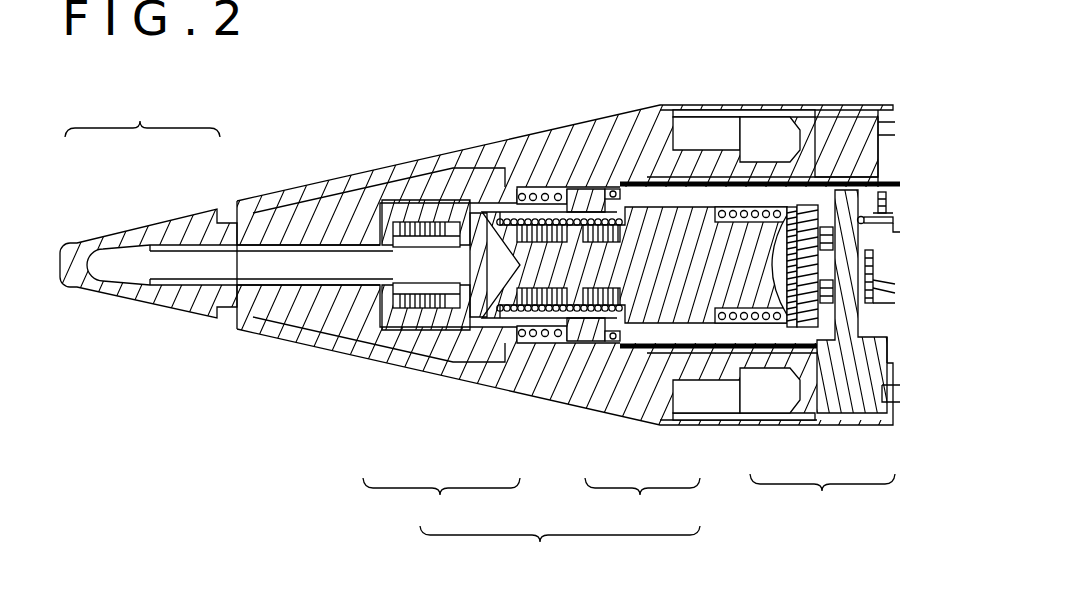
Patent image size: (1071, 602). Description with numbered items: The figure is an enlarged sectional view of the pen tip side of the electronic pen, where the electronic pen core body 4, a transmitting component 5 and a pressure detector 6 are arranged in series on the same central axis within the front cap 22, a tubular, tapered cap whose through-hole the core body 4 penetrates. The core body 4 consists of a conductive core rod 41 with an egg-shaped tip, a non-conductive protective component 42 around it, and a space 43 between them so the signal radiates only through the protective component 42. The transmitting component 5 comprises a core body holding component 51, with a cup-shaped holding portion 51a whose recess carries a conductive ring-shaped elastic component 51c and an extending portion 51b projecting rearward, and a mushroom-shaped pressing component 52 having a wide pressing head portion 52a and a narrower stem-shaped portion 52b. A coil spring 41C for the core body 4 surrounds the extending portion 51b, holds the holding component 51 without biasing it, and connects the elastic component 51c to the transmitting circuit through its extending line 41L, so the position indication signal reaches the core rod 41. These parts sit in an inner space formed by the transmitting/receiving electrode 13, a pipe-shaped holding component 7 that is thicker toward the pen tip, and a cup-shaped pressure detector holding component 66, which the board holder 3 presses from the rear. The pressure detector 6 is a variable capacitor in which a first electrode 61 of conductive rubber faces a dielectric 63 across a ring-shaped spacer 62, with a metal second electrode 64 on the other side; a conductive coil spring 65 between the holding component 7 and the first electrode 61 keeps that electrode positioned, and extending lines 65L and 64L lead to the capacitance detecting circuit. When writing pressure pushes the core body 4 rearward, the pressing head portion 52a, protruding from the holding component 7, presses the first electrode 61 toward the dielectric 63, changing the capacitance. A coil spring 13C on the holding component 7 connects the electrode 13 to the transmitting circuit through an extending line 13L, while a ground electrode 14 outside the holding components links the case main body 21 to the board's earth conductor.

The board holder 3 is at (893, 350).
The electronic pen core body 4 is at (535, 301).
The core rod 41 is at (122, 263).
The protective component 42 is at (78, 268).
The space 43 is at (180, 248).
The transmitting component 5 is at (574, 301).
The core body holding component 51 is at (574, 301).
The holding portion 51a is at (407, 312).
The extending portion 51b is at (545, 278).
The elastic component 51c is at (430, 300).
The pressing component 52 is at (574, 301).
The pressing head portion 52a is at (705, 290).
The stem-shaped portion 52b is at (650, 330).
The pressure detector 6 is at (855, 301).
The first electrode 61 is at (792, 330).
The spacer 62 is at (808, 330).
The dielectric 63 is at (828, 305).
The second electrode 64 is at (848, 345).
The coil spring for the pressure detector 65 is at (740, 277).
The pressure detector holding component 66 is at (775, 240).
The pipe-shaped holding component 7 is at (577, 197).
The transmitting/receiving electrode 13 is at (328, 205).
The coil spring for the transmitting/receiving electrode 13C is at (545, 193).
The extending line 13L is at (887, 200).
The ground electrode 14 is at (713, 153).
The case main body 21 is at (848, 112).
The front cap 22 is at (413, 172).
The coil spring for the core body 41C is at (612, 190).
The extending line 41L is at (893, 181).
The extending line 64L is at (893, 300).
The extending line 65L is at (897, 222).